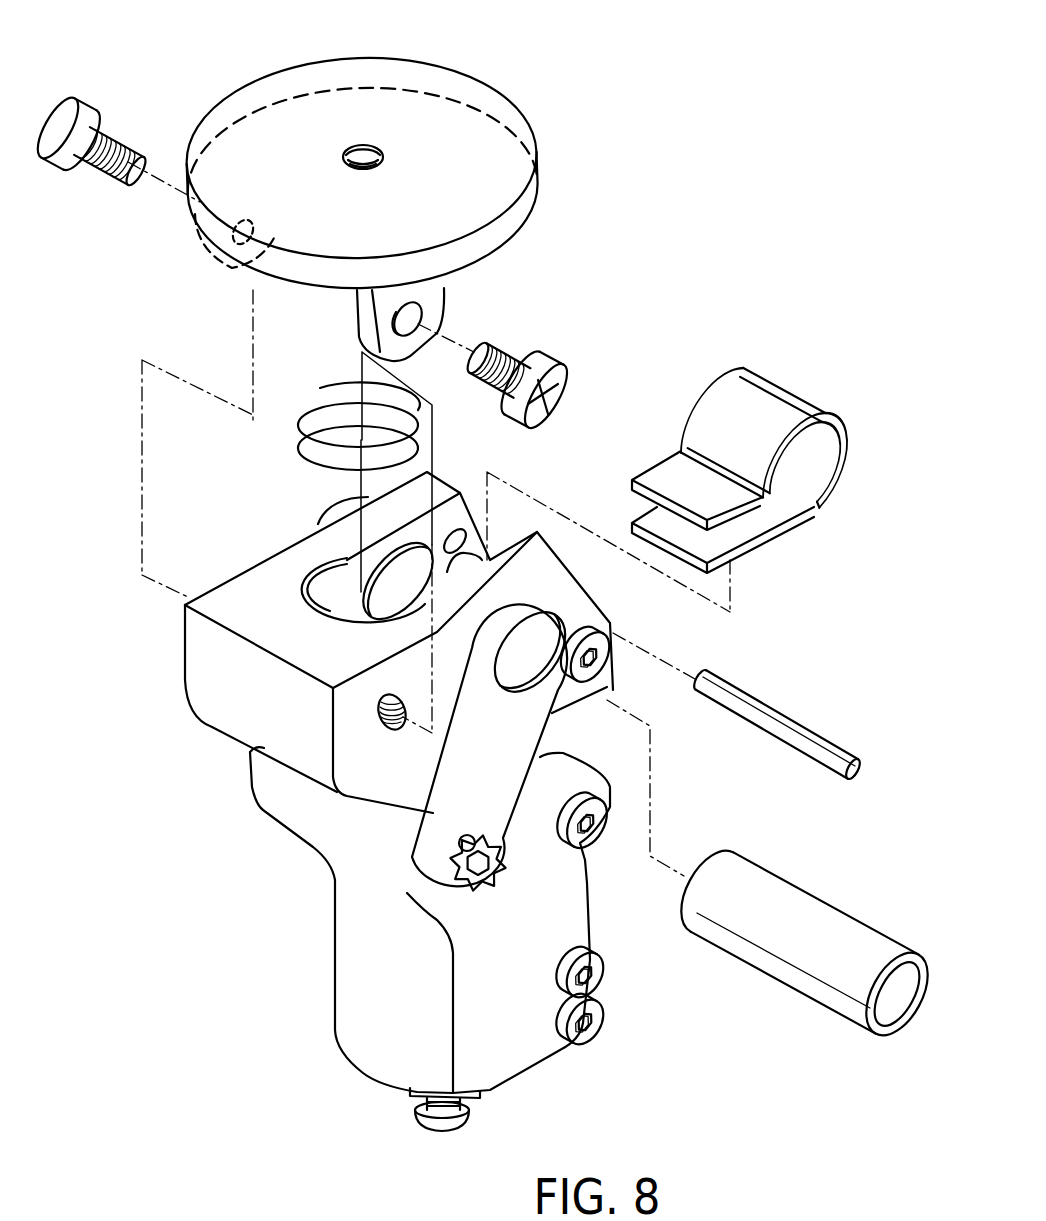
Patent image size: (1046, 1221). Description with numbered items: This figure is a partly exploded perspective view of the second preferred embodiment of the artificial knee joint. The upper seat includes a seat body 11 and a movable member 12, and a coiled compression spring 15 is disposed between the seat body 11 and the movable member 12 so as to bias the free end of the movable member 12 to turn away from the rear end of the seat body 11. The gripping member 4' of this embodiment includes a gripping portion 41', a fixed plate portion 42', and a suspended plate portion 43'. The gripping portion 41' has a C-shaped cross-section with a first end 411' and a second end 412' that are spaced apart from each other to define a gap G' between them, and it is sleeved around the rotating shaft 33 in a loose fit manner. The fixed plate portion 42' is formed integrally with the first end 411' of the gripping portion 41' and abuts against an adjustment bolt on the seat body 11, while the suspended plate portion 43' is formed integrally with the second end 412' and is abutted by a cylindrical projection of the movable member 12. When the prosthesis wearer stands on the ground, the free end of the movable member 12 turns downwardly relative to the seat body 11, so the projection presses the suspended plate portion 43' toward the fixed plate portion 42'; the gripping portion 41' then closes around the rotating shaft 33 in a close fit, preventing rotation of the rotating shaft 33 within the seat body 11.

The movable member 12 is at (226, 71).
The coiled compression spring 15 is at (321, 406).
The seat body 11 is at (272, 543).
The gripping member 4' is at (779, 430).
The gripping portion 41' is at (805, 453).
The first end 411' is at (869, 512).
The second end 412' is at (712, 416).
The suspended plate portion 43' is at (696, 462).
The fixed plate portion 42' is at (723, 552).
The gap G' is at (816, 543).
The rotating shaft 33 is at (812, 904).